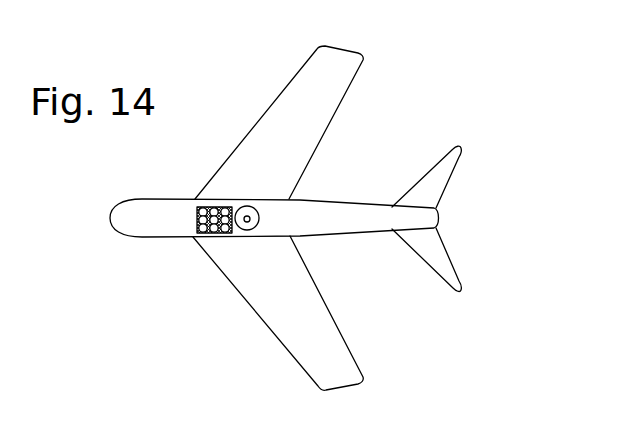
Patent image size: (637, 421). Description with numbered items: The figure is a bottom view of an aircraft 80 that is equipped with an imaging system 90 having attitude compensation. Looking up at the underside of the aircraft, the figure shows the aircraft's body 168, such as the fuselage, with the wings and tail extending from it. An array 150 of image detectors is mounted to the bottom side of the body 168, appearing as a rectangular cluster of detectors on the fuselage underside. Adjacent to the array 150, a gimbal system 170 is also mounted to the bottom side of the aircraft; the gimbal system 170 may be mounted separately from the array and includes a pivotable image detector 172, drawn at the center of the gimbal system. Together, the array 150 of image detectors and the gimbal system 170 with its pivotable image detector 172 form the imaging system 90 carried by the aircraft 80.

The aircraft 80 is at (243, 99).
The imaging system 90 is at (232, 196).
The array of image detectors 150 is at (212, 196).
The body 168 is at (176, 239).
The gimbal system 170 is at (261, 213).
The pivotable image detector 172 is at (248, 224).